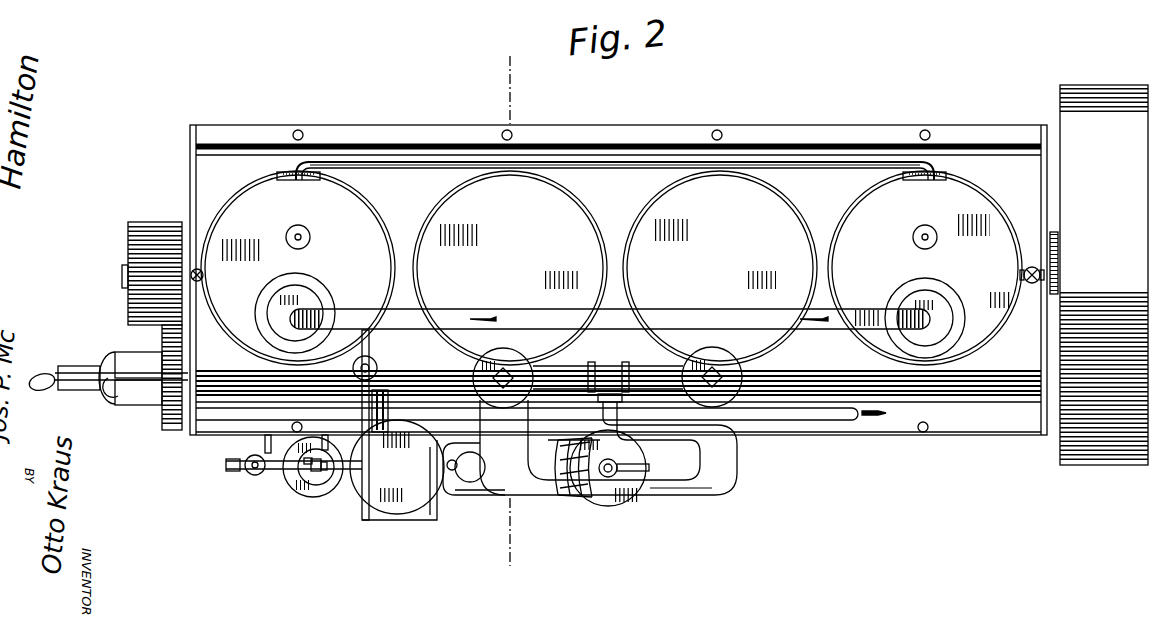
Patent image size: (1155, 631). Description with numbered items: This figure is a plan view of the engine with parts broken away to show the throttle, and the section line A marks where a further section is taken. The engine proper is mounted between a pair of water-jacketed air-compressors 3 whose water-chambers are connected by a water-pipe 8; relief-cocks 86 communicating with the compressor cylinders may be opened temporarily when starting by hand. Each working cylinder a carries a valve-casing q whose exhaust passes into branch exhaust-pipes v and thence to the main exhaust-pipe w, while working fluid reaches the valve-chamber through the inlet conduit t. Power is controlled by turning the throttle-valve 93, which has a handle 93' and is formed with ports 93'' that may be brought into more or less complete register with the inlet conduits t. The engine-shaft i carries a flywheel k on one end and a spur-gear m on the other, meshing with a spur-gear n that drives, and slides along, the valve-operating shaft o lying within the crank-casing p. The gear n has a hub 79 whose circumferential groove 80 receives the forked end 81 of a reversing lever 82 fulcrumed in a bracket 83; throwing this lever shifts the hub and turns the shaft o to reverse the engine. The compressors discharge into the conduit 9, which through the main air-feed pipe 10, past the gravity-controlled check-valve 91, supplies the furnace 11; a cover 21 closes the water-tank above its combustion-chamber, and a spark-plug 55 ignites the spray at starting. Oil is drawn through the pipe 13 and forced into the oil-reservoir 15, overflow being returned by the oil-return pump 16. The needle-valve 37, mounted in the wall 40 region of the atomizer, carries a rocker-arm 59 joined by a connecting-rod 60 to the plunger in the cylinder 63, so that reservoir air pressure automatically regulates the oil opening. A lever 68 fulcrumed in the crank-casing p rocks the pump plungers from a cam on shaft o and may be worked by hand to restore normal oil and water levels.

The section line A— A is at (507, 310).
The crank-casing p is at (790, 126).
The main exhaust-pipe w is at (815, 418).
The water-pipe 8 is at (425, 160).
The air-compressor 3 is at (366, 205).
The working cylinder a is at (642, 202).
The conduit 9 is at (762, 318).
The relief-cock 86 is at (198, 268).
The flywheel k is at (1099, 275).
The valve-casing q is at (503, 348).
The branch exhaust-pipe v is at (660, 372).
The spark-plug 55 is at (482, 444).
The inlet conduit t is at (692, 496).
The throttle-valve 93 is at (608, 489).
The ports 93'' is at (566, 487).
The handle 93' is at (649, 467).
The furnace 11 is at (468, 498).
The cover 21 is at (478, 466).
The oil-reservoir 15 is at (408, 502).
The wall 40 is at (436, 505).
The main compressed-air feed-pipe 10 is at (364, 490).
The check-valve 91 is at (375, 366).
The lever 68 is at (390, 406).
The pipe 13 is at (236, 464).
The oil-return pump 16 is at (262, 470).
The connecting-rod 60 is at (300, 482).
The rocker-arm 59 is at (316, 480).
The needle-valve 37 is at (330, 488).
The cylinder 63 is at (318, 458).
The spur-gear m is at (150, 224).
The spur-gear n is at (172, 430).
The engine-shaft i is at (121, 277).
The valve-operating shaft o is at (86, 390).
The reversing lever 82 is at (60, 372).
The forked end 81 is at (100, 364).
The bracket 83 is at (138, 372).
The hub 79 is at (152, 406).
The circumferential groove 80 is at (112, 396).